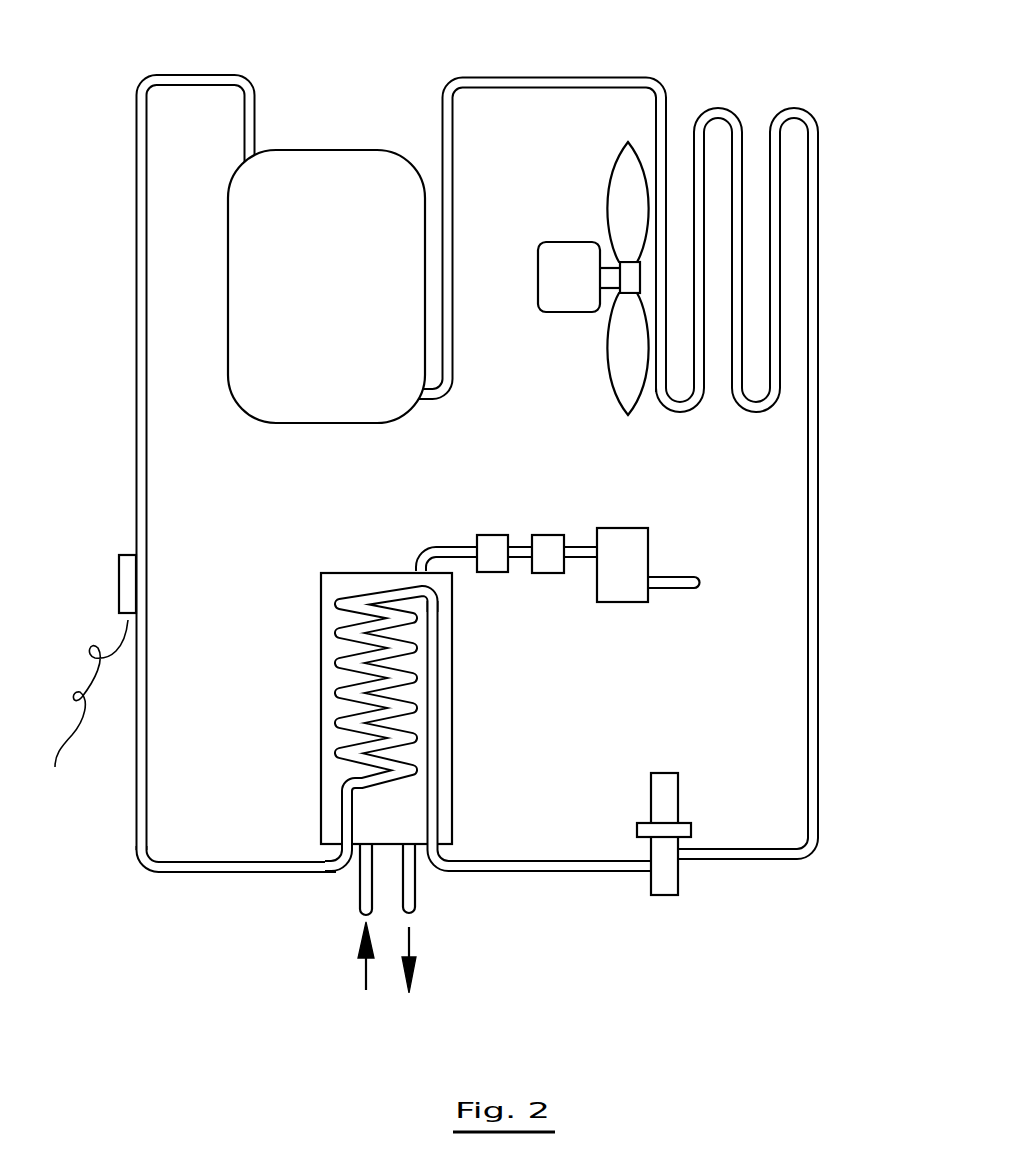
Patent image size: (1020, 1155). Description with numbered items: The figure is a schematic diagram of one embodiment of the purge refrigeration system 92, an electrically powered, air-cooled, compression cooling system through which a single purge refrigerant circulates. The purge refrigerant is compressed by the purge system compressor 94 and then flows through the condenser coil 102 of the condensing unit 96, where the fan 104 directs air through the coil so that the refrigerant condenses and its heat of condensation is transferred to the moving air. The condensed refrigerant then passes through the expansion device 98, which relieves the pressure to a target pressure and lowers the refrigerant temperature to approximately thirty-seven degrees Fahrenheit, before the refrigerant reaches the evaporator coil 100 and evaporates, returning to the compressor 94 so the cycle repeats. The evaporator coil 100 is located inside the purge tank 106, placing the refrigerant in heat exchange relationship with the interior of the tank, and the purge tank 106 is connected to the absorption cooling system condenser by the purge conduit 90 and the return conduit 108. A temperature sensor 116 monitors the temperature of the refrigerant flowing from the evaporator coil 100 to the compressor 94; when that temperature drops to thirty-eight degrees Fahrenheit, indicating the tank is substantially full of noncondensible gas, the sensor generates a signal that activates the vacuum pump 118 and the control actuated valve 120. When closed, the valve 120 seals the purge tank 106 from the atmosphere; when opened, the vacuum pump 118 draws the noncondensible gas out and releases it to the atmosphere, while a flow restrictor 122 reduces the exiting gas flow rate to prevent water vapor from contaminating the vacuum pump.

The purge conduit 90 is at (360, 913).
The purge refrigeration system 92 is at (98, 100).
The purge system compressor 94 is at (337, 251).
The condensing unit 96 is at (797, 53).
The expansion device 98 is at (665, 782).
The evaporator coil 100 is at (352, 657).
The condenser coil 102 is at (818, 177).
The fan 104 is at (575, 253).
The purge tank 106 is at (321, 600).
The return conduit 108 is at (415, 910).
The temperature sensor 116 is at (125, 590).
The vacuum pump 118 is at (627, 537).
The control actuated valve 120 is at (493, 543).
The flow restrictor 122 is at (550, 567).